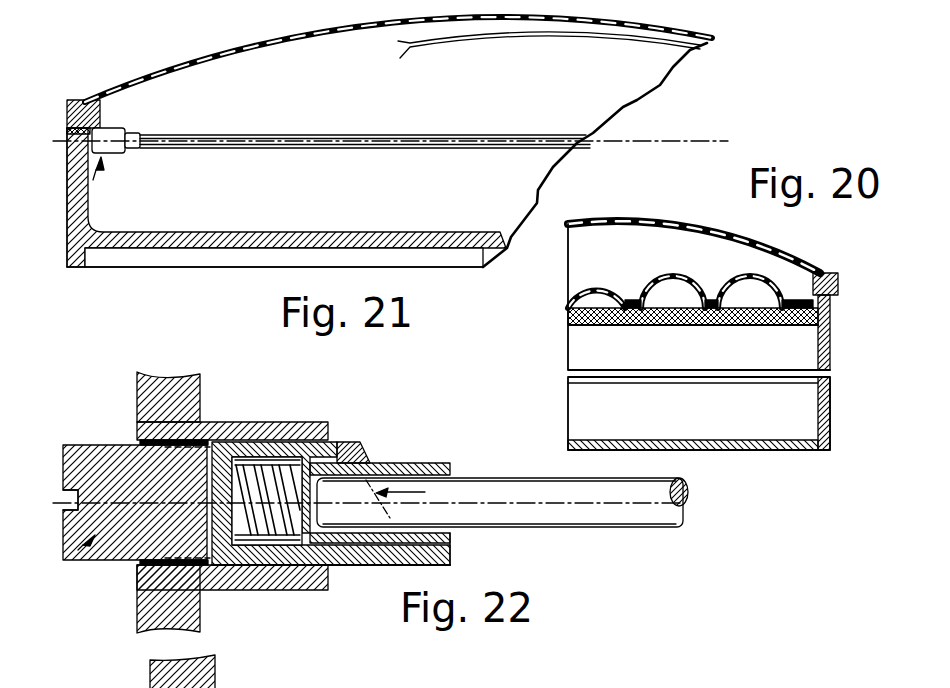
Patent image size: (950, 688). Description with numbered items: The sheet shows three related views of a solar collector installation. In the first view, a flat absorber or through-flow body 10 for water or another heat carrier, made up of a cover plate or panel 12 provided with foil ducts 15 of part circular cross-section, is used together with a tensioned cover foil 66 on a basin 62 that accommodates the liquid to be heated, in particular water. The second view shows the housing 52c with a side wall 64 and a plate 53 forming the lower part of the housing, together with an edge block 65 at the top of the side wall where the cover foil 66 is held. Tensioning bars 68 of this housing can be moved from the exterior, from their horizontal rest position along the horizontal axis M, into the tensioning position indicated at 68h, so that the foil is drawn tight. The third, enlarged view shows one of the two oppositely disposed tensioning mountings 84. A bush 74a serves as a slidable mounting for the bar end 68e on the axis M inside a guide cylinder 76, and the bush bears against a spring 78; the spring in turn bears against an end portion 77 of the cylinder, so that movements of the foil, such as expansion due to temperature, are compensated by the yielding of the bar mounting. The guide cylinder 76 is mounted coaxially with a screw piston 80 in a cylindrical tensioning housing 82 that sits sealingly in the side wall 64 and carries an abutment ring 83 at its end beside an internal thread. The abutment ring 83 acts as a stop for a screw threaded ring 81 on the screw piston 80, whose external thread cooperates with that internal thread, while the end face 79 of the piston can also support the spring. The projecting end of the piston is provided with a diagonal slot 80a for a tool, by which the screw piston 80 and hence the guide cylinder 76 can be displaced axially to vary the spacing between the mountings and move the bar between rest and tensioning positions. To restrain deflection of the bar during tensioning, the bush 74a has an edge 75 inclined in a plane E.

In FIG. 20, the through-flow body 10 is at (613, 272).
In FIG. 20, the cover plate or panel 12 is at (716, 300).
In FIG. 20, the foil ducts 15 is at (671, 272).
In FIG. 21, the housing 52c is at (150, 266).
In FIG. 21, the plate 53 is at (207, 258).
In FIG. 20, the basin 62 is at (790, 418).
In FIG. 21, the side wall 64 is at (90, 206).
In FIG. 22, the side wall 64 is at (192, 407).
In FIG. 21, the edge block 65 is at (78, 100).
In FIG. 20, the edge block 65 is at (828, 295).
In FIG. 21, the cover foil / tensioning bar 66 is at (232, 50).
In FIG. 20, the cover foil / tensioning bar 66 is at (650, 228).
In FIG. 21, the tensioning bar 68 is at (425, 148).
In FIG. 20, the tensioning bar 68 is at (777, 253).
In FIG. 22, the tensioning bar 68 is at (676, 527).
In FIG. 22, the bar end 68e is at (343, 568).
In FIG. 21, the tensioning position 68h is at (468, 43).
In FIG. 22, the bush 74a is at (343, 458).
In FIG. 22, the edge 75 is at (455, 555).
In FIG. 21, the guide cylinder 76 is at (138, 148).
In FIG. 22, the guide cylinder 76 is at (373, 563).
In FIG. 22, the end portion 77 is at (133, 557).
In FIG. 22, the spring 78 is at (275, 590).
In FIG. 22, the end face 79 is at (272, 432).
In FIG. 22, the screw piston 80 is at (77, 563).
In FIG. 22, the diagonal slot 80a is at (67, 503).
In FIG. 22, the screw threaded ring 81 is at (210, 592).
In FIG. 21, the tensioning housing 82 is at (110, 128).
In FIG. 22, the tensioning housing 82 is at (323, 430).
In FIG. 22, the abutment ring 83 is at (143, 436).
In FIG. 21, the tensioning mountings 84 is at (67, 190).
In FIG. 22, the plane E is at (405, 498).
In FIG. 21, the horizontal axis M is at (718, 141).
In FIG. 22, the horizontal axis M is at (565, 505).